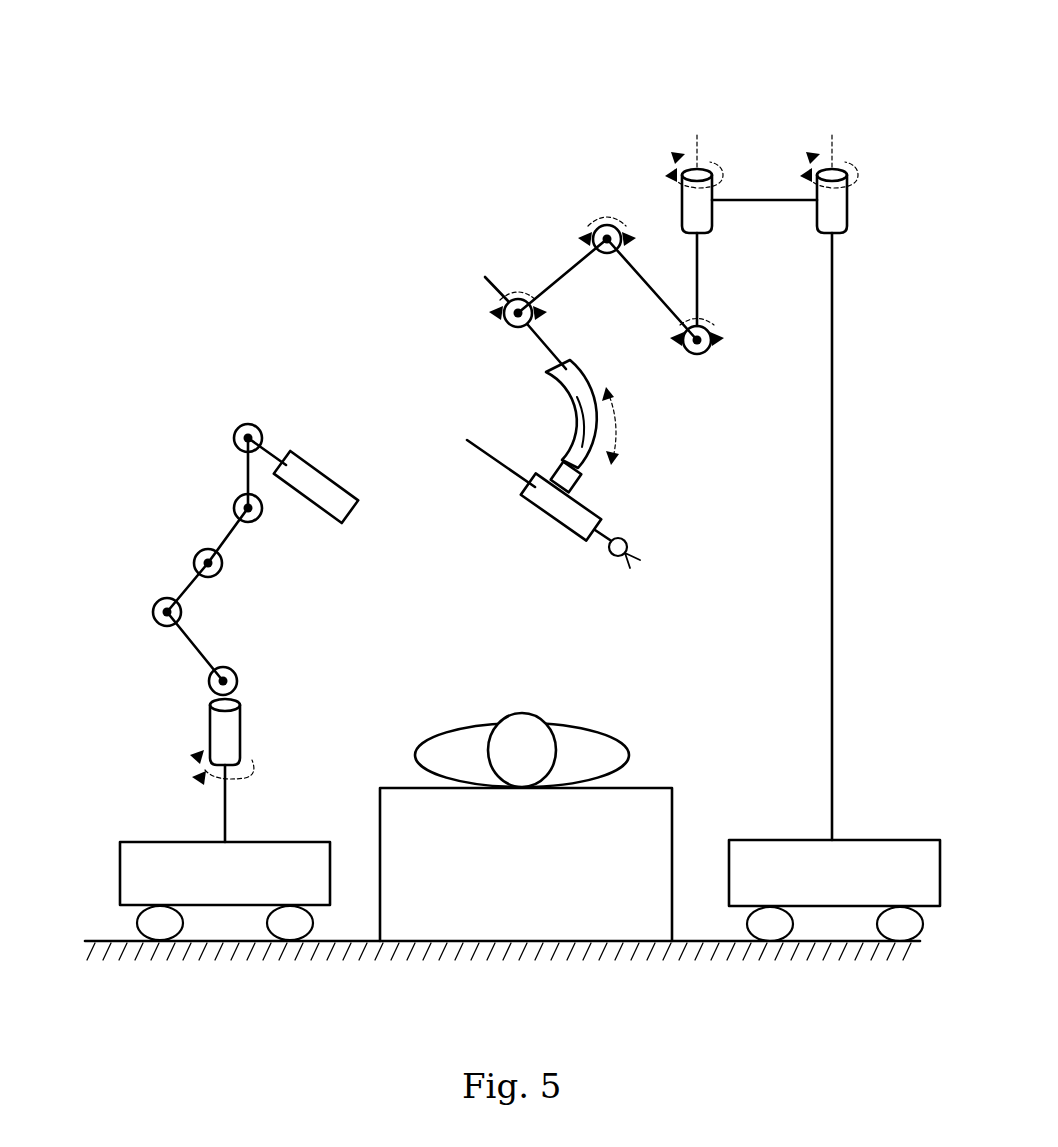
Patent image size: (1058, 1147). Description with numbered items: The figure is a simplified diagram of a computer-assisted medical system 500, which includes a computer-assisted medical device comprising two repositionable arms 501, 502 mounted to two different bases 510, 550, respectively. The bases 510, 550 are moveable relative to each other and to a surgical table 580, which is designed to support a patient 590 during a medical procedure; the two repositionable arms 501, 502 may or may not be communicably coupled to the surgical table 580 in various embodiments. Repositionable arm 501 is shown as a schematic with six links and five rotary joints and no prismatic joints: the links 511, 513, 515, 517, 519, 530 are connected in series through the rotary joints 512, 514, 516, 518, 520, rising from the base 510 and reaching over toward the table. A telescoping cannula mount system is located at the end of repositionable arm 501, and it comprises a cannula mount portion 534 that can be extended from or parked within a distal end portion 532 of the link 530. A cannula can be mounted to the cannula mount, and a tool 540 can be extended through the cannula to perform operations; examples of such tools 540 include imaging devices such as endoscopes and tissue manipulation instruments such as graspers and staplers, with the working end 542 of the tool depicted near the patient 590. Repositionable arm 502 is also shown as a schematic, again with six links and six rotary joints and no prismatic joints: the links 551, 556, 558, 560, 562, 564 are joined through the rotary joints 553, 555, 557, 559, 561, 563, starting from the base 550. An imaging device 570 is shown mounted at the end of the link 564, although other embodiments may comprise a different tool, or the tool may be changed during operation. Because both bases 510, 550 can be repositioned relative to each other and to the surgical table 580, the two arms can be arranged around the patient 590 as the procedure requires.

The computer-assisted medical system 500 is at (202, 83).
The repositionable arm 501 is at (857, 100).
The repositionable arm 502 is at (145, 362).
The base 510 is at (895, 822).
The link 511 is at (850, 392).
The rotary joint 512 is at (845, 248).
The link 513 is at (740, 192).
The rotary joint 514 is at (715, 245).
The link 515 is at (708, 285).
The rotary joint 516 is at (700, 365).
The link 517 is at (660, 268).
The rotary joint 518 is at (605, 200).
The link 519 is at (553, 275).
The rotary joint 520 is at (490, 305).
The link 530 is at (528, 345).
The distal end portion 532 is at (545, 392).
The cannula mount portion 534 is at (563, 455).
The tool 540 is at (530, 520).
The end effector 542 is at (610, 565).
The base 550 is at (112, 858).
The link 551 is at (213, 818).
The rotary joint 553 is at (200, 730).
The rotary joint 555 is at (205, 685).
The link 556 is at (207, 645).
The rotary joint 557 is at (145, 617).
The link 558 is at (195, 600).
The rotary joint 559 is at (185, 558).
The link 560 is at (235, 545).
The rotary joint 561 is at (225, 500).
The link 562 is at (233, 468).
The rotary joint 563 is at (248, 420).
The link 564 is at (273, 455).
The imaging device 570 is at (350, 490).
The surgical table 580 is at (650, 775).
The patient 590 is at (607, 732).